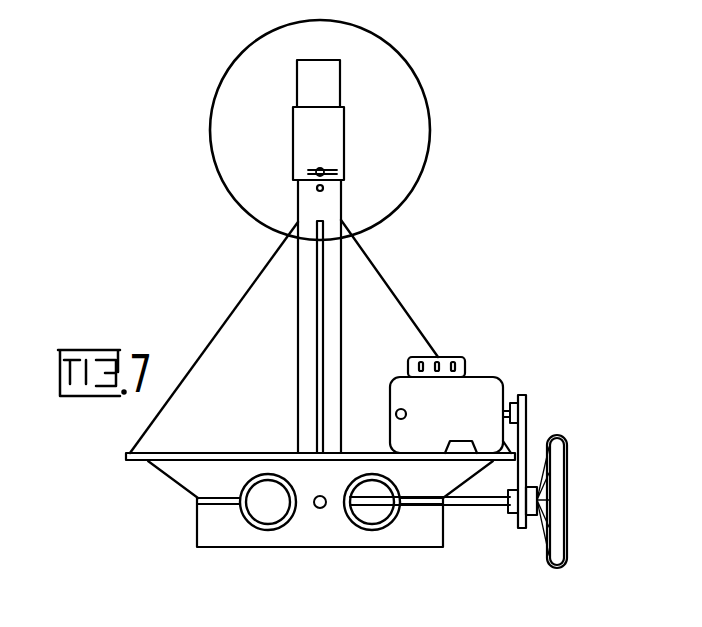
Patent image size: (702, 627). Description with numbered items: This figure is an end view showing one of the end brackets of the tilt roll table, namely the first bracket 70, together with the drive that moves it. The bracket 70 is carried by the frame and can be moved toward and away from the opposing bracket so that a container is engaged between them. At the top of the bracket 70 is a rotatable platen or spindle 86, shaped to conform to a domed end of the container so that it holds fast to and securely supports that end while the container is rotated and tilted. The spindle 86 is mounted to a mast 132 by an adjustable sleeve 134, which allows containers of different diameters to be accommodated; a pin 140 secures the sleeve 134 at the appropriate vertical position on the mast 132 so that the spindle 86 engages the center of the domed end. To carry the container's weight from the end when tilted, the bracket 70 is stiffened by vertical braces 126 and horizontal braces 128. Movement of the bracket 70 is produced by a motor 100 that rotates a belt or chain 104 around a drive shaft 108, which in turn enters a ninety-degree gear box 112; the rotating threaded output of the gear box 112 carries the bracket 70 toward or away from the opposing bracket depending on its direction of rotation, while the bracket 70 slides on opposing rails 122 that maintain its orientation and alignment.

The first bracket 70 is at (352, 287).
The spindle 86 is at (407, 133).
The motor 100 is at (473, 393).
The belt or chain 104 is at (526, 443).
The drive shaft 108 is at (465, 507).
The gear box 112 is at (318, 495).
The rails 122 is at (362, 528).
The vertical braces 126 is at (317, 249).
The horizontal braces 128 is at (233, 452).
The mast 132 is at (316, 88).
The adjustable sleeve 134 is at (306, 130).
The pin 140 is at (330, 167).